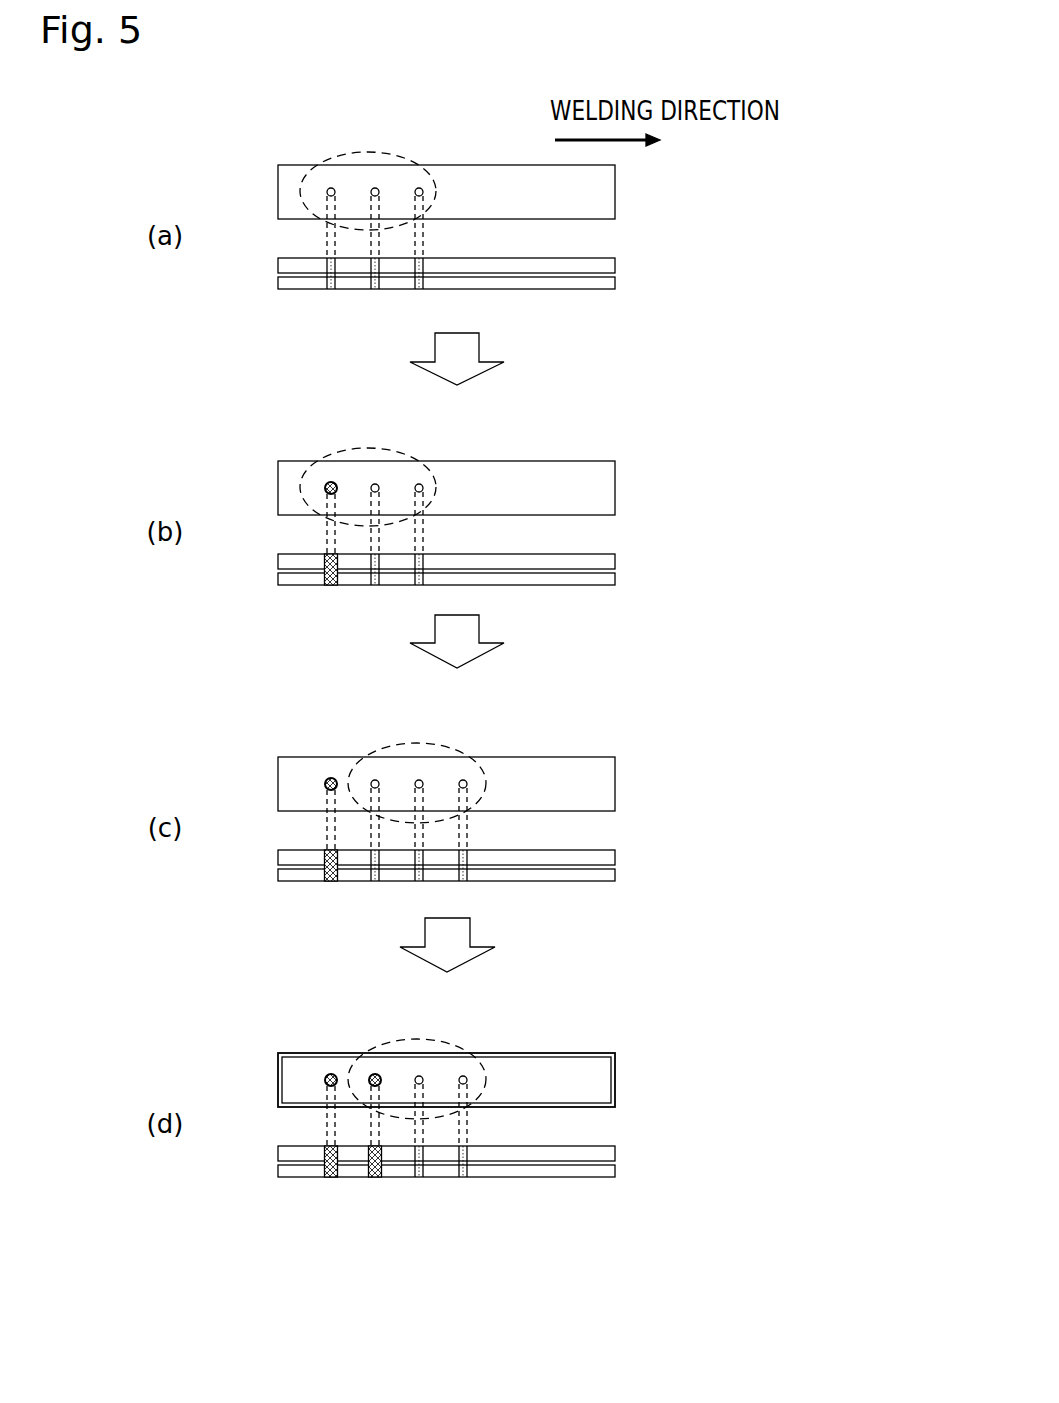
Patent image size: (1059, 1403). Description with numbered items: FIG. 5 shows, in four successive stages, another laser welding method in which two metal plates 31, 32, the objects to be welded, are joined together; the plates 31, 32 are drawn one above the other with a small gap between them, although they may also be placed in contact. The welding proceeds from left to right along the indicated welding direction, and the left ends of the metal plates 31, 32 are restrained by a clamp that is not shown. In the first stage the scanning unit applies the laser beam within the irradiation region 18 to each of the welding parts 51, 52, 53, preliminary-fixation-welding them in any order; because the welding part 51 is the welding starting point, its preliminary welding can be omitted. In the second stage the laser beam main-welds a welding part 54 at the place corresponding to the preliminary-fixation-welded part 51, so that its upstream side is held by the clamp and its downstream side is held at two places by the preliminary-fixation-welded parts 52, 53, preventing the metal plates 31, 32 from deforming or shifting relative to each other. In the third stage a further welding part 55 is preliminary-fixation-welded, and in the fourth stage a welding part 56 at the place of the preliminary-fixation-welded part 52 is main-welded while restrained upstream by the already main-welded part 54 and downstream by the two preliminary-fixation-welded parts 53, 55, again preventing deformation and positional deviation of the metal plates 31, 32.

The laser irradiation region 18 is at (441, 164).
The metal plate 31 is at (616, 190).
The metal plate 32 is at (607, 290).
The welding part 51 is at (331, 188).
The welding part 52 is at (375, 188).
The welding part 53 is at (419, 188).
The welding part 54 is at (331, 482).
The welding part 55 is at (463, 780).
The welding part 56 is at (375, 1074).